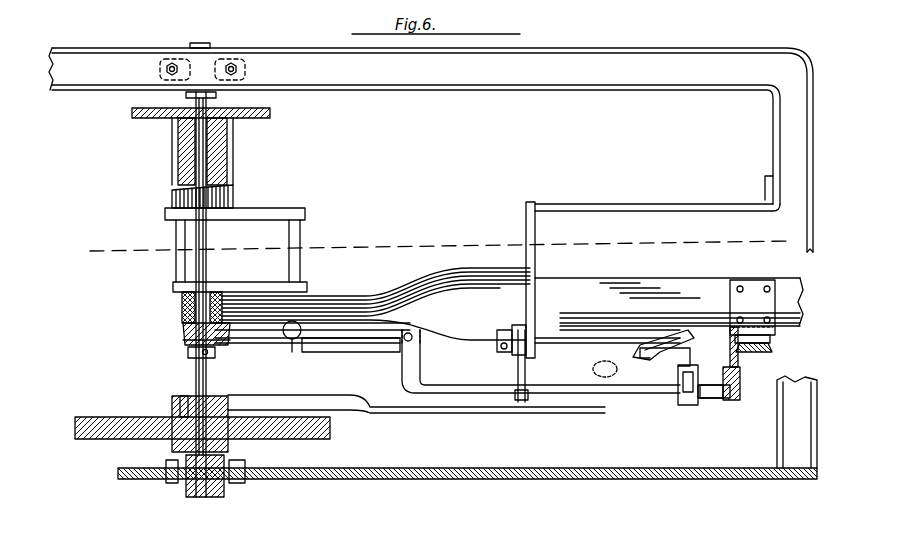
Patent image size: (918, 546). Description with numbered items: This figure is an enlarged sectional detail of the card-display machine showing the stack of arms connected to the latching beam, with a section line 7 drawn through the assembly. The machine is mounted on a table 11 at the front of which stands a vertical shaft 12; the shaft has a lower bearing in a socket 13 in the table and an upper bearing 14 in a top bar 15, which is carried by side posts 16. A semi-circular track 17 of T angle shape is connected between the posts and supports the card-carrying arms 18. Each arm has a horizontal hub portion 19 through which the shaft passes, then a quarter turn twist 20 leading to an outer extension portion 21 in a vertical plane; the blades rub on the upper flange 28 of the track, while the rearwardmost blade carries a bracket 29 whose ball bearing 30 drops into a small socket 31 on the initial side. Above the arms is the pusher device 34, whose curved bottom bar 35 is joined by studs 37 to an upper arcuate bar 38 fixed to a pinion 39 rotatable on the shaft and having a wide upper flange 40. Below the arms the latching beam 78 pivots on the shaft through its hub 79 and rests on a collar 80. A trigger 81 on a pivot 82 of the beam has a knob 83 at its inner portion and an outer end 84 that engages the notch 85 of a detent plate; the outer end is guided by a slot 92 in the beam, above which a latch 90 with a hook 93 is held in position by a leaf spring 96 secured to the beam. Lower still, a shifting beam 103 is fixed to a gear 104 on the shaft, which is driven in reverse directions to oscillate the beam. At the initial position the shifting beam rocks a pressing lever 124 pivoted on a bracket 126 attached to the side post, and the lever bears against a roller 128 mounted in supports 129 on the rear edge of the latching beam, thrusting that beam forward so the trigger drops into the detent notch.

The section line 7 is at (90, 240).
The table 11 is at (470, 486).
The vertical shaft 12 is at (216, 95).
The socket 13 is at (192, 498).
The upper bearing 14 is at (210, 44).
The top bar 15 is at (538, 60).
The side posts 16 is at (790, 143).
The semi-circular track 17 is at (739, 398).
The arms 18 is at (607, 278).
The hub portion 19 is at (226, 296).
The quarter turn twist 20 is at (470, 300).
The outer extension portion 21 is at (690, 287).
The upper flange 28 is at (733, 326).
The bracket 29 is at (747, 290).
The ball bearing 30 is at (758, 332).
The socket 31 is at (773, 354).
The pusher device 34 is at (259, 200).
The curved bottom bar 35 is at (308, 274).
The studs 37 is at (304, 235).
The upper arcuate bar 38 is at (306, 208).
The pinion 39 is at (222, 156).
The upper flange 40 is at (270, 113).
The latching beam 78 is at (256, 345).
The hub 79 is at (185, 341).
The collar 80 is at (195, 359).
The trigger 81 is at (420, 389).
The pivot 82 is at (402, 347).
The knob 83 is at (292, 340).
The outer end 84 is at (710, 398).
The notch 85 is at (720, 382).
The latch 90 is at (664, 331).
The slot 92 is at (682, 382).
The hook 93 is at (605, 369).
The leaf spring 96 is at (680, 352).
The shifting beam 103 is at (470, 409).
The gear 104 is at (165, 426).
The pressing lever 124 is at (518, 377).
The bracket 126 is at (540, 239).
The roller 128 is at (512, 332).
The supports 129 is at (499, 345).